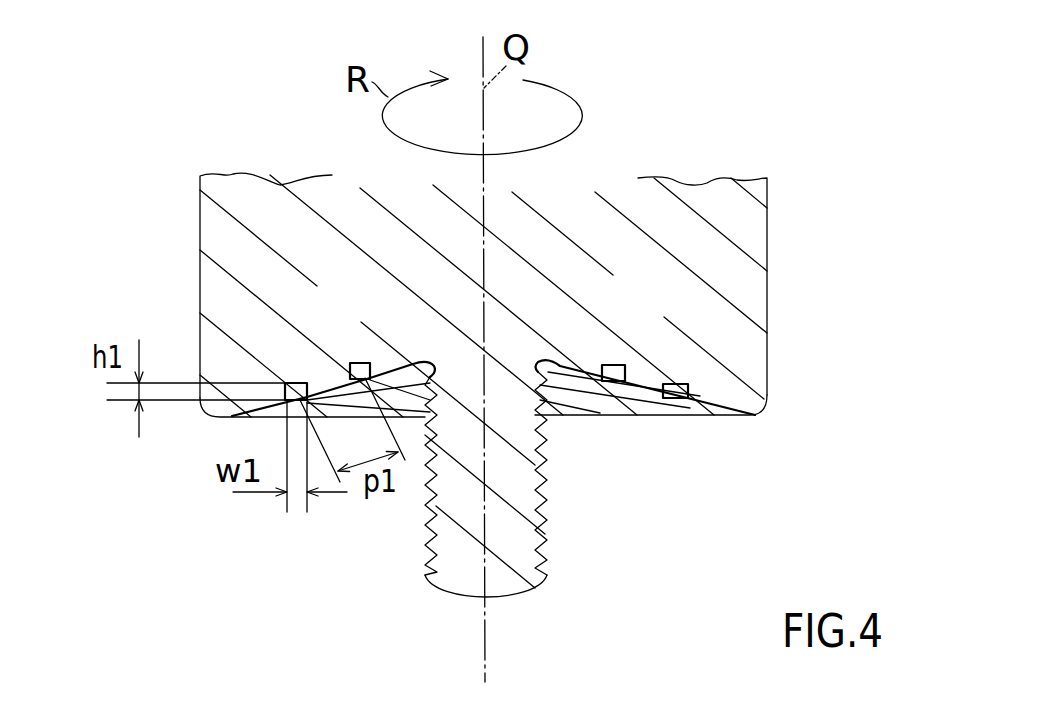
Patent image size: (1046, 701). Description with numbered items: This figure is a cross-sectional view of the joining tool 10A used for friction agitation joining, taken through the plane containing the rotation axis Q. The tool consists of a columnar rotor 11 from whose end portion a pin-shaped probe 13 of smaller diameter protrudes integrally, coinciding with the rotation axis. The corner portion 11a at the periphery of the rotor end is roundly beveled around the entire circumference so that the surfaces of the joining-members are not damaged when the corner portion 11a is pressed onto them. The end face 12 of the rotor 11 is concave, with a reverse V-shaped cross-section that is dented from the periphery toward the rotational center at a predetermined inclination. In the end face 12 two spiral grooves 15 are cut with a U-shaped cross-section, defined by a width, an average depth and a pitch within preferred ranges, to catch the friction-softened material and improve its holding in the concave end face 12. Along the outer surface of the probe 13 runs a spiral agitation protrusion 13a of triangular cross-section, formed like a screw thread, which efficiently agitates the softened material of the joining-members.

The joining tool 10A is at (198, 197).
The rotor 11 is at (240, 235).
The corner portion 11a is at (758, 417).
The end face 12 is at (648, 383).
The probe 13 is at (470, 560).
The spiral agitation protrusion 13a is at (433, 520).
The spiral groove 15 is at (297, 383).